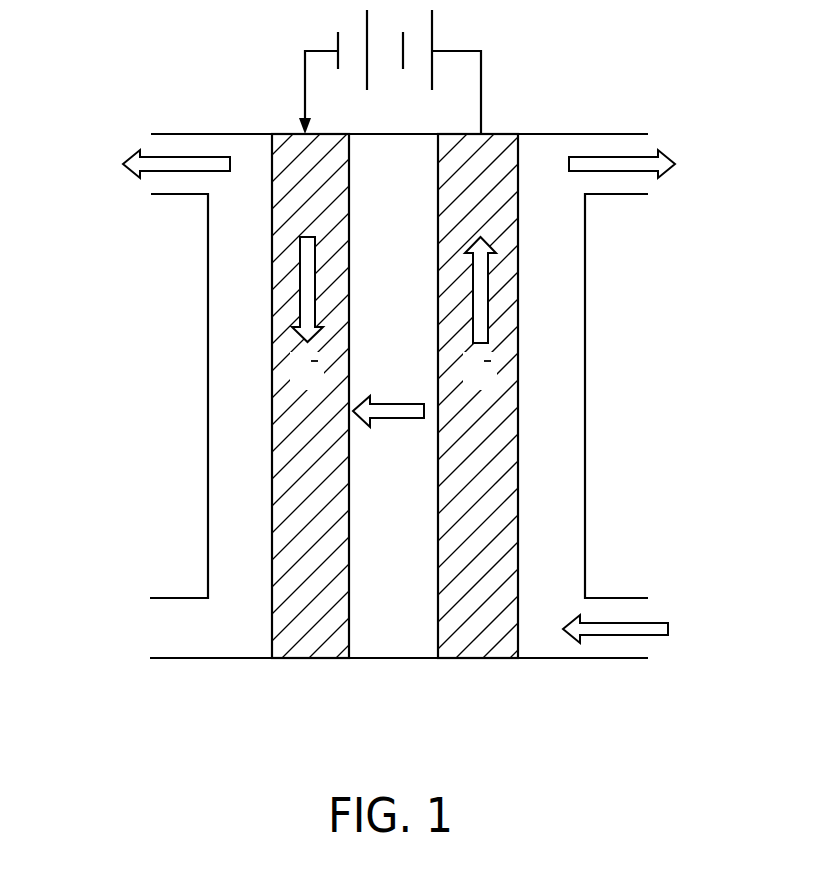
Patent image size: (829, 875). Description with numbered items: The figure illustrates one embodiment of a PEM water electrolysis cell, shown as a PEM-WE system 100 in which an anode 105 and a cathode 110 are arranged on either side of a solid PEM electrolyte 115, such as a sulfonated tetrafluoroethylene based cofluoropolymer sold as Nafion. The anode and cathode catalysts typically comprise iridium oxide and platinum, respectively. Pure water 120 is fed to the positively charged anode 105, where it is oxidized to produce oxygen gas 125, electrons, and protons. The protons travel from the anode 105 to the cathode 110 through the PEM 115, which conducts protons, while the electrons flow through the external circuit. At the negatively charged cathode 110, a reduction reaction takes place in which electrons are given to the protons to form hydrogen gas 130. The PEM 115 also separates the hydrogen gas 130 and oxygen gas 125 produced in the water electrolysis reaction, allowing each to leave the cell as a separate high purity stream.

The PEM-WE system 100 is at (136, 82).
The anode 105 is at (475, 658).
The cathode 110 is at (313, 658).
The solid PEM electrolyte 115 is at (400, 658).
The pure water 120 is at (656, 620).
The oxygen gas 125 is at (666, 158).
The hydrogen gas 130 is at (137, 156).